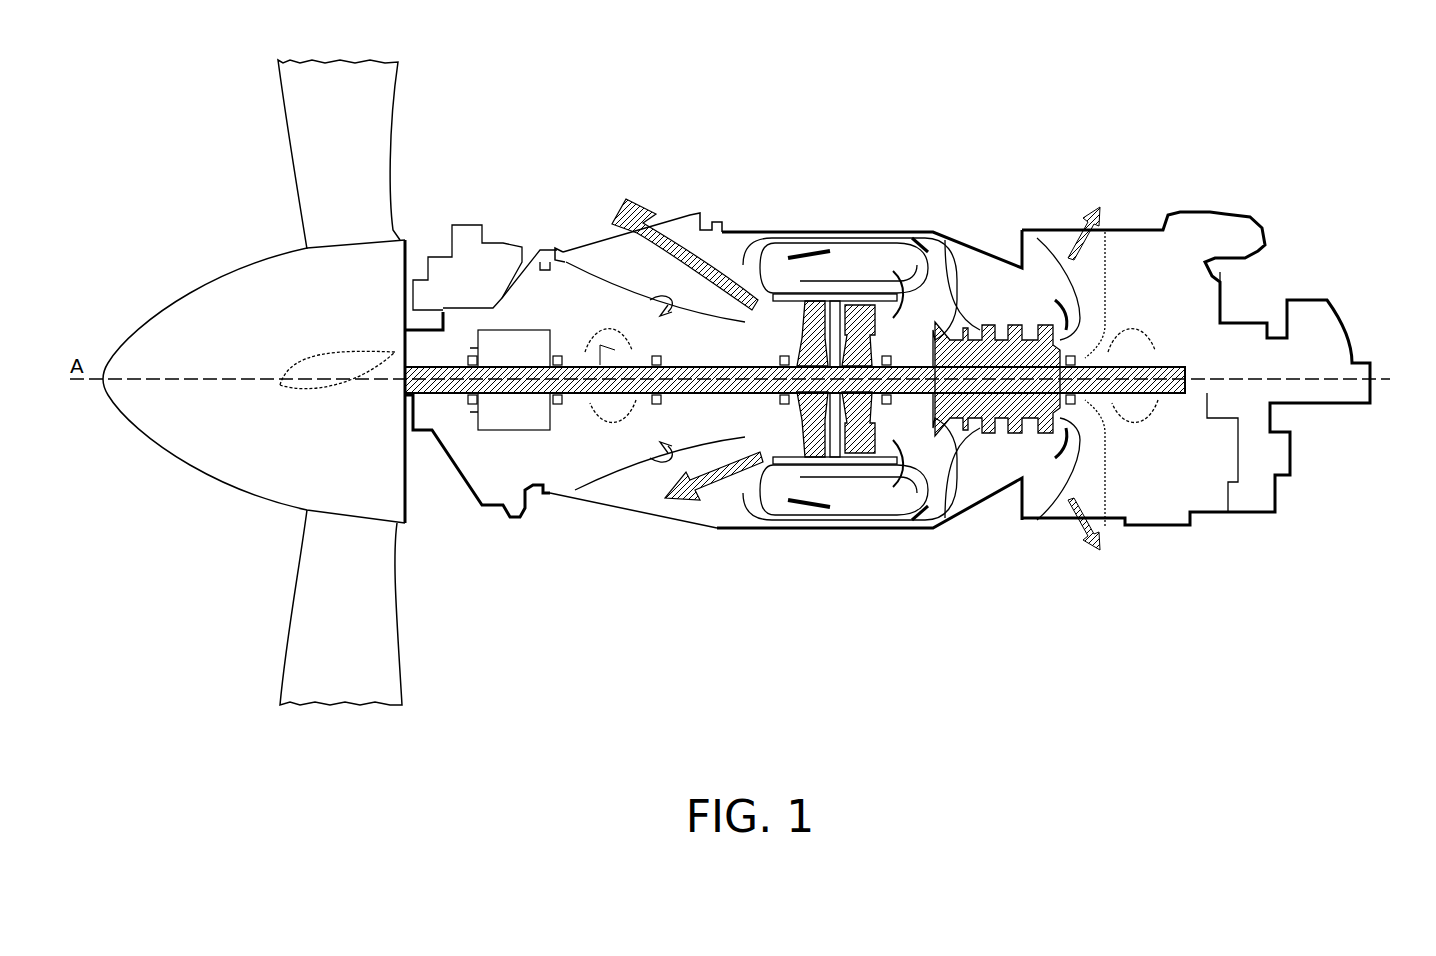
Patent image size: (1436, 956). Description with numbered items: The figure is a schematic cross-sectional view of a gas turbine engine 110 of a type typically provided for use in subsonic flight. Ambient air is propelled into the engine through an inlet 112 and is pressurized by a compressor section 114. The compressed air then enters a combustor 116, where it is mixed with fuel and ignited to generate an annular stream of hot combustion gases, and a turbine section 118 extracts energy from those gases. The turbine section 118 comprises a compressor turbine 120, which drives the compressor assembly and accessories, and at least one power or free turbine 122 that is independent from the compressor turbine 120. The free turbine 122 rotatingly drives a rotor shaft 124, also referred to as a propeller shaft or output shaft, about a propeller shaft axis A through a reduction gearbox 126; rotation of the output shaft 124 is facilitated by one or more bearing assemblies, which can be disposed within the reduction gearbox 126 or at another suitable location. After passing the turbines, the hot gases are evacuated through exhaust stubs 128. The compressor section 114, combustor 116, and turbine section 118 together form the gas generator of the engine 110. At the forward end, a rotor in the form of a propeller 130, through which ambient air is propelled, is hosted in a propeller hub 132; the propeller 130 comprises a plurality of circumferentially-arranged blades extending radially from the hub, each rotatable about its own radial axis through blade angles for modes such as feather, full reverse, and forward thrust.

The gas turbine engine 110 is at (754, 130).
The inlet 112 is at (1093, 207).
The compressor section 114 is at (977, 265).
The combustor 116 is at (875, 262).
The turbine section 118 is at (838, 394).
The compressor turbine 120 is at (870, 396).
The power or free turbine 122 is at (817, 382).
The rotor shaft 124 is at (533, 418).
The reduction gearbox 126 is at (515, 380).
The exhaust stubs 128 is at (606, 205).
The propeller 130 is at (310, 128).
The propeller hub 132 is at (232, 293).